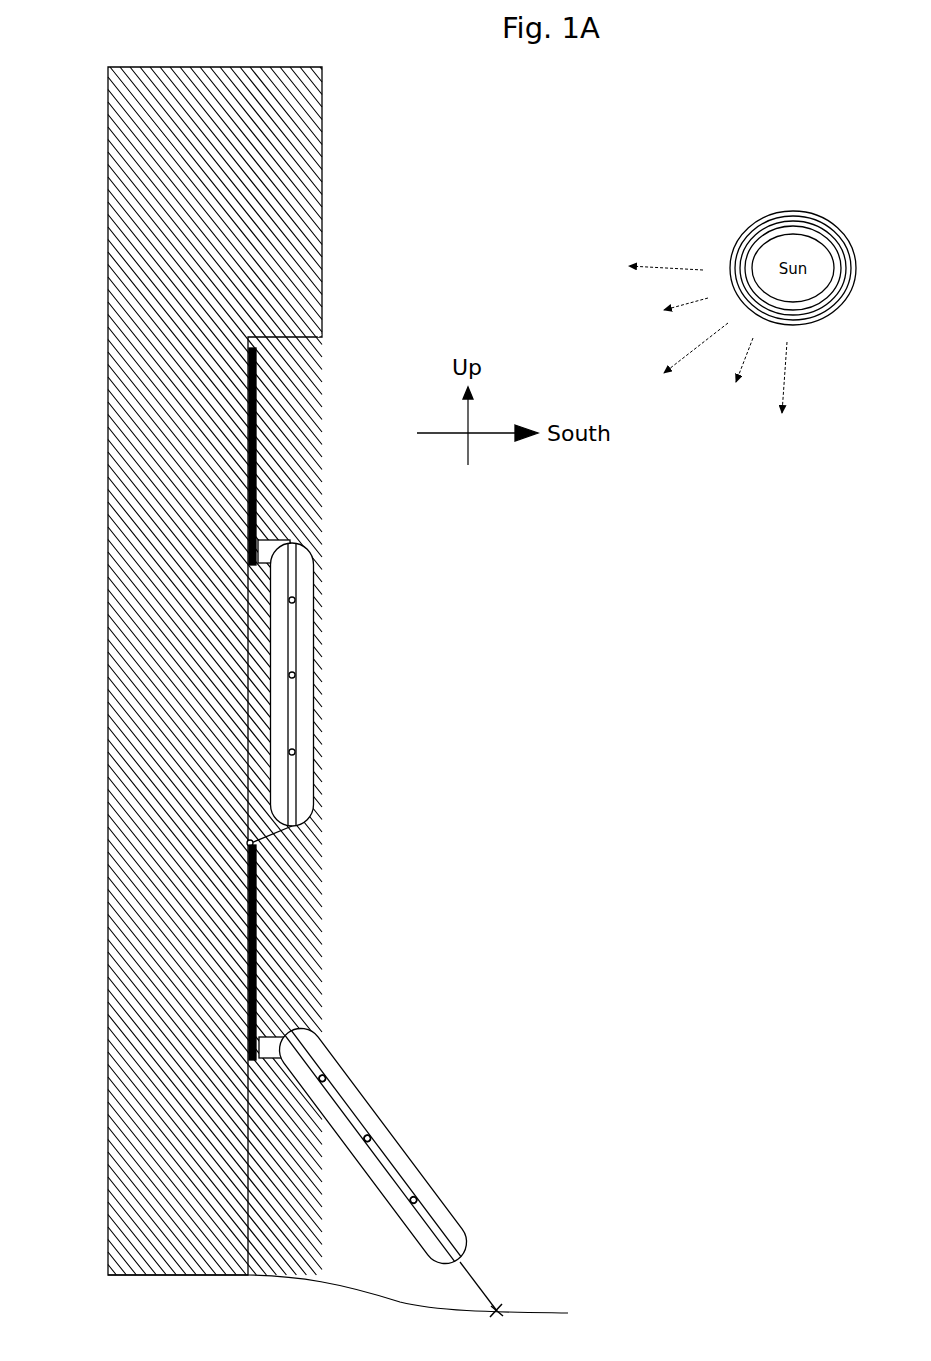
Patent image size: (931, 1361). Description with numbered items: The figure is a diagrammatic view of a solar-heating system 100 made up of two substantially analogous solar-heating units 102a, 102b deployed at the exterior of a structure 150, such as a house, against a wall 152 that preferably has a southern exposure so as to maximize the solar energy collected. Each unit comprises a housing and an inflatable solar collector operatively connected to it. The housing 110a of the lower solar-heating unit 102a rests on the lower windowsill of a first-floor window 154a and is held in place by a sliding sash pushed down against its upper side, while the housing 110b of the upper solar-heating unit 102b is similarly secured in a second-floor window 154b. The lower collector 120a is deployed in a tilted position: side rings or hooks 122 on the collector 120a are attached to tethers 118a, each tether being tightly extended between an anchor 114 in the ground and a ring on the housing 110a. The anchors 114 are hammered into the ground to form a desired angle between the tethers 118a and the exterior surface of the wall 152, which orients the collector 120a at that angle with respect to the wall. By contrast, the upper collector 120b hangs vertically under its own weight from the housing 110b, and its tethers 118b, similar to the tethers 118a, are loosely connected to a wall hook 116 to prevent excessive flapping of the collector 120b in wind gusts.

The solar-heating system 100 is at (510, 251).
The structure 150 is at (108, 970).
The wall 152 is at (244, 631).
The first-floor window 154a is at (262, 926).
The second-floor window 154b is at (258, 411).
The housing 110a is at (290, 1036).
The housing 110b is at (276, 538).
The solar-heating unit 102a is at (393, 1062).
The solar-heating unit 102b is at (344, 576).
The inflatable solar collector 120a is at (418, 1162).
The inflatable solar collector 120b is at (316, 656).
The tethers 118a is at (476, 1280).
The tethers 118b is at (306, 848).
The wall hook 116 is at (246, 843).
The anchor 114 is at (508, 1306).
The side rings or hooks 122 is at (316, 1082).